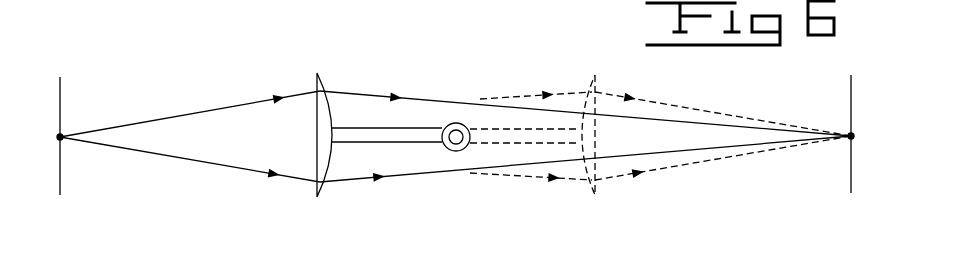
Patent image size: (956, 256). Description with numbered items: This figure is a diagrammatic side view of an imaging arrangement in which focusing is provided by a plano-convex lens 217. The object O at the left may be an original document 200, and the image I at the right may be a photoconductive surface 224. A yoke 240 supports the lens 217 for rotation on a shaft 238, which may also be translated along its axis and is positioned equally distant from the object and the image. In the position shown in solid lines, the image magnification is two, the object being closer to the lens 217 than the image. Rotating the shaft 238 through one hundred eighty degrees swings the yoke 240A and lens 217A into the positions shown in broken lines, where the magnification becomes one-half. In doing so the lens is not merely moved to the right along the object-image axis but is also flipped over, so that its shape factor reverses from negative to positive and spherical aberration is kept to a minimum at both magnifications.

The original document 200 is at (60, 93).
The plano-convex lens 217 is at (326, 82).
The plano-convex lens in rotated position 217A is at (592, 82).
The photoconductive surface 224 is at (851, 90).
The shaft 238 is at (454, 123).
The yoke 240 is at (371, 133).
The yoke in rotated position 240A is at (550, 141).